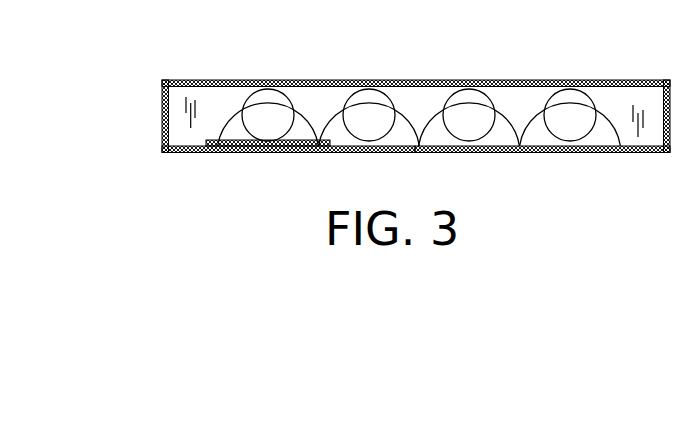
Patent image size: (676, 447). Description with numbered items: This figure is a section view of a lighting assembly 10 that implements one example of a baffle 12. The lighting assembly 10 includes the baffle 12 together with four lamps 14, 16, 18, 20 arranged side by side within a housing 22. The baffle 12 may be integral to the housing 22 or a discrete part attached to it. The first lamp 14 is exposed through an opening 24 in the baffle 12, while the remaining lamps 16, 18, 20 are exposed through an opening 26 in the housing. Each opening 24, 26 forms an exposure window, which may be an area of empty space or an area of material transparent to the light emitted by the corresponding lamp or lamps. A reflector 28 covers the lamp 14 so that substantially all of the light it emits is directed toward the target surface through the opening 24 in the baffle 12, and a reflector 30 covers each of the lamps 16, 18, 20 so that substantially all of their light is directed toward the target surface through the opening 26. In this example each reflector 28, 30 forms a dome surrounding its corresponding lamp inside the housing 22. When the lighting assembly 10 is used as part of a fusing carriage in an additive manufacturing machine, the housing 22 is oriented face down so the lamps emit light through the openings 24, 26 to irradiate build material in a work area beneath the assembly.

The lighting assembly 10 is at (171, 183).
The baffle 12 is at (213, 150).
The lamp 14 is at (270, 100).
The lamp 16 is at (370, 100).
The lamp 18 is at (470, 100).
The lamp 20 is at (572, 100).
The housing 22 is at (172, 80).
The opening 24 is at (280, 148).
The opening 26 is at (503, 152).
The reflector 28 is at (240, 92).
The reflector 30 is at (336, 90).